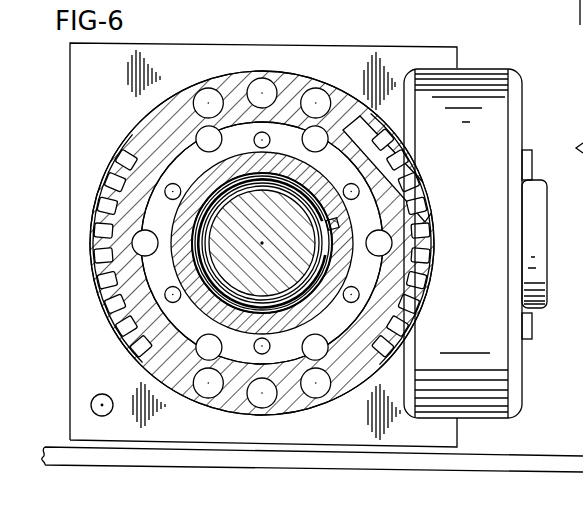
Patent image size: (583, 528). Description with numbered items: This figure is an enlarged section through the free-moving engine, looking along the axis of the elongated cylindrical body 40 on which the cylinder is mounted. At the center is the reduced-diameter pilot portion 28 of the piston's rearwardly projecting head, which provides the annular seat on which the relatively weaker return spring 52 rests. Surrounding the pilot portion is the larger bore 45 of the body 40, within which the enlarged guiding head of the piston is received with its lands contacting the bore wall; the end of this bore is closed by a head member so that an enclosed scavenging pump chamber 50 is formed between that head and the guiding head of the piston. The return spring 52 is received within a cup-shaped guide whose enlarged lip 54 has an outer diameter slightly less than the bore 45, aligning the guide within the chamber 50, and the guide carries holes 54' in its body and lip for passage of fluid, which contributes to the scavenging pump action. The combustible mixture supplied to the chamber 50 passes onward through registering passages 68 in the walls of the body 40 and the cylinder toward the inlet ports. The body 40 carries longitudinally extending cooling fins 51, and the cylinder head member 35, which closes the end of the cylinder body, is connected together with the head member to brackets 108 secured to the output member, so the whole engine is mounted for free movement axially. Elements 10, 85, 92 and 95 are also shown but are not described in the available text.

The drive motor unit 10 is at (500, 230).
The pilot portion 28 is at (213, 251).
The cylinder head member 35 is at (218, 62).
The cylindrical body 40 is at (197, 74).
The bore 45 is at (175, 238).
The scavenging pump chamber 50 is at (348, 322).
The cooling fins 51 is at (98, 220).
The return spring 52 is at (137, 338).
The lip 54 is at (218, 237).
The holes 54' is at (211, 207).
The registering passages 68 is at (316, 100).
The housing 85 is at (582, 48).
The cover 92 is at (570, 78).
The fastener 95 is at (570, 101).
The brackets 108 is at (343, 458).